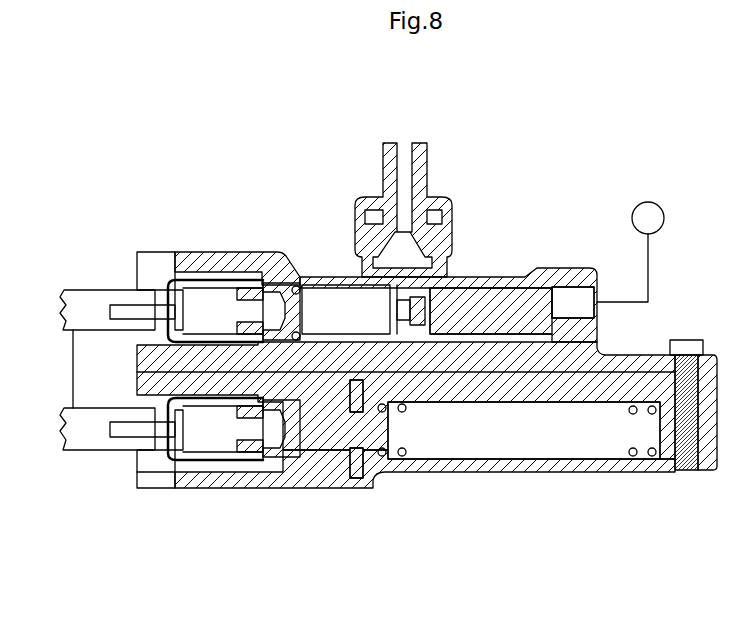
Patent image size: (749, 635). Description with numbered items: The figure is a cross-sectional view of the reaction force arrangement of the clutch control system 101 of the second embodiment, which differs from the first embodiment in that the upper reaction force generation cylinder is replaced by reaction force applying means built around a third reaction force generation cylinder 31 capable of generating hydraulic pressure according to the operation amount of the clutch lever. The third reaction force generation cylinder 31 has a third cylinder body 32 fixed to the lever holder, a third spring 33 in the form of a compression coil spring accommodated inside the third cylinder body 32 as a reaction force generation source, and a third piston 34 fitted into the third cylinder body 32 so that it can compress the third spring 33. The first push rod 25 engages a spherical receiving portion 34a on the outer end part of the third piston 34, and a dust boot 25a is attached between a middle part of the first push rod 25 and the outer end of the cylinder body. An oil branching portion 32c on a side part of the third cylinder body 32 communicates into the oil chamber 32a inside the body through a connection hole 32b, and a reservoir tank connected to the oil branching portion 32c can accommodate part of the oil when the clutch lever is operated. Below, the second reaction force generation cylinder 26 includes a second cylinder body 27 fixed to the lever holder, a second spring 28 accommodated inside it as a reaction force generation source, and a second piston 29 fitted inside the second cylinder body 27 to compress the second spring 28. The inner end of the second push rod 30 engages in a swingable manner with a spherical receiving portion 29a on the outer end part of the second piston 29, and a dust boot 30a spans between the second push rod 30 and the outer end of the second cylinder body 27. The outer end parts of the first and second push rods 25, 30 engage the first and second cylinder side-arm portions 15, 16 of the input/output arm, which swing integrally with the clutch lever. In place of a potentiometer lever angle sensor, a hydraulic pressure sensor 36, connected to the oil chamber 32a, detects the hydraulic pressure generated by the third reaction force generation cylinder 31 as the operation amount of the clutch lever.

The clutch control system 101 is at (625, 118).
The first cylinder side-arm portion 15 is at (83, 287).
The second cylinder side-arm portion 16 is at (75, 452).
The first push rod 25 is at (127, 300).
The dust boot 25a is at (215, 275).
The second reaction force generation cylinder 26 is at (186, 493).
The second cylinder body 27 is at (285, 488).
The second spring 28 is at (533, 460).
The second piston 29 is at (333, 452).
The spherical receiving portion 29a is at (250, 458).
The second push rod 30 is at (125, 448).
The dust boot 30a is at (207, 473).
The third reaction force generation cylinder 31 is at (186, 246).
The third cylinder body 32 is at (502, 275).
The oil chamber 32a is at (525, 308).
The connection hole 32b is at (430, 263).
The oil branching portion 32c is at (452, 207).
The third spring 33 is at (543, 272).
The third piston 34 is at (320, 295).
The spherical receiving portion 34a is at (262, 282).
The hydraulic pressure sensor 36 is at (654, 204).